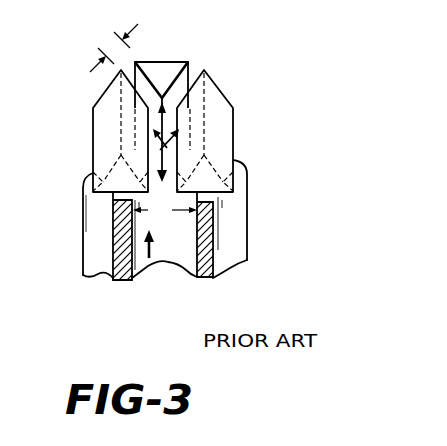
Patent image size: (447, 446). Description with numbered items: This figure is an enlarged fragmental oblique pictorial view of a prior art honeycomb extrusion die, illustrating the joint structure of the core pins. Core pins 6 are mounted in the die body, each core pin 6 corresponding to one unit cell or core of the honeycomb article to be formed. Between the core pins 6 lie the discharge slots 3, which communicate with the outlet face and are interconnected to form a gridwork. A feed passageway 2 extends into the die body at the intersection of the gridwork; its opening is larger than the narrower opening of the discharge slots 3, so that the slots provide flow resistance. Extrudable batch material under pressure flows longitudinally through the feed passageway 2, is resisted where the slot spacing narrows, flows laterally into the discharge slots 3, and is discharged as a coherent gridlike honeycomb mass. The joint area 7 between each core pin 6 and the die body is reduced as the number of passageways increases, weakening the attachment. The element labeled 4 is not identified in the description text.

The base 2 is at (158, 268).
The V-groove block 3 is at (190, 62).
The gap between prisms 4 is at (157, 190).
The prism 6 is at (210, 92).
The pin 7 is at (200, 180).